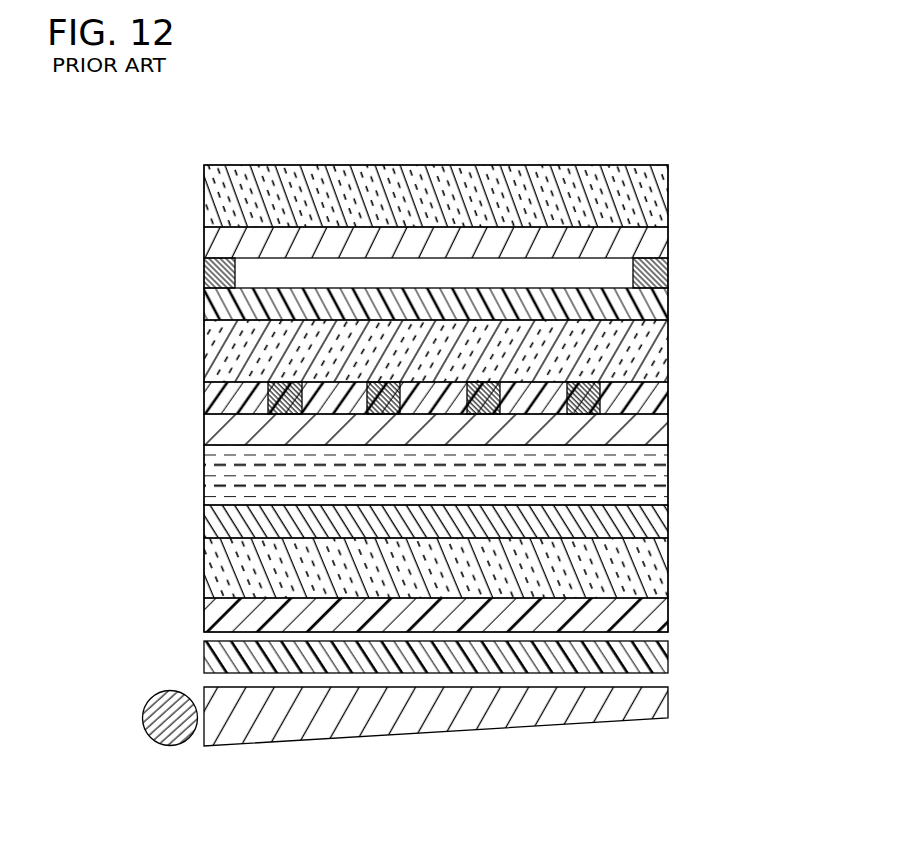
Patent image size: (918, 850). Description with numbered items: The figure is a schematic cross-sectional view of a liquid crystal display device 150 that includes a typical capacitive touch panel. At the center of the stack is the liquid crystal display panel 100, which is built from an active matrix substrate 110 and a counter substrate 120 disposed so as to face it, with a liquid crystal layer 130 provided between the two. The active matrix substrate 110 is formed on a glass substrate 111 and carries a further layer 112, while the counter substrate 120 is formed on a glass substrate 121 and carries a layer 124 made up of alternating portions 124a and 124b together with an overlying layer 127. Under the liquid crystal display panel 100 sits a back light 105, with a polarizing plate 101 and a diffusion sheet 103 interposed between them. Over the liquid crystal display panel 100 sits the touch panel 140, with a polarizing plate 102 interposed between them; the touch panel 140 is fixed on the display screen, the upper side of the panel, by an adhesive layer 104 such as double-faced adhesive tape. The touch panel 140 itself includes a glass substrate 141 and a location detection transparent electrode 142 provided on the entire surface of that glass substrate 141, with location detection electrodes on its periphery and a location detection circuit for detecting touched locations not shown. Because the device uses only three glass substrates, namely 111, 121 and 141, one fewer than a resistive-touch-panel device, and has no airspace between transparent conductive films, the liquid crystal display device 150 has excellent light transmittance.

The liquid crystal display device 150 is at (232, 141).
The touch panel 140 is at (439, 211).
The glass substrate 141 is at (660, 188).
The location detection transparent electrode 142 is at (655, 231).
The adhesive layer 104 is at (660, 268).
The polarizing plate 102 is at (660, 303).
The liquid crystal display panel 100 is at (440, 459).
The counter substrate 120 is at (477, 387).
The glass substrate 121 is at (660, 340).
The color filter layer 124 is at (513, 395).
The black matrix 124a is at (660, 392).
The color filter 124b is at (600, 395).
The common electrode 127 is at (660, 432).
The liquid crystal layer 130 is at (200, 448).
The active matrix substrate 110 is at (439, 551).
The thin film transistor array layer 112 is at (660, 540).
The glass substrate 111 is at (660, 572).
The polarizing plate 101 is at (660, 620).
The diffusion sheet 103 is at (668, 658).
The back light 105 is at (668, 723).